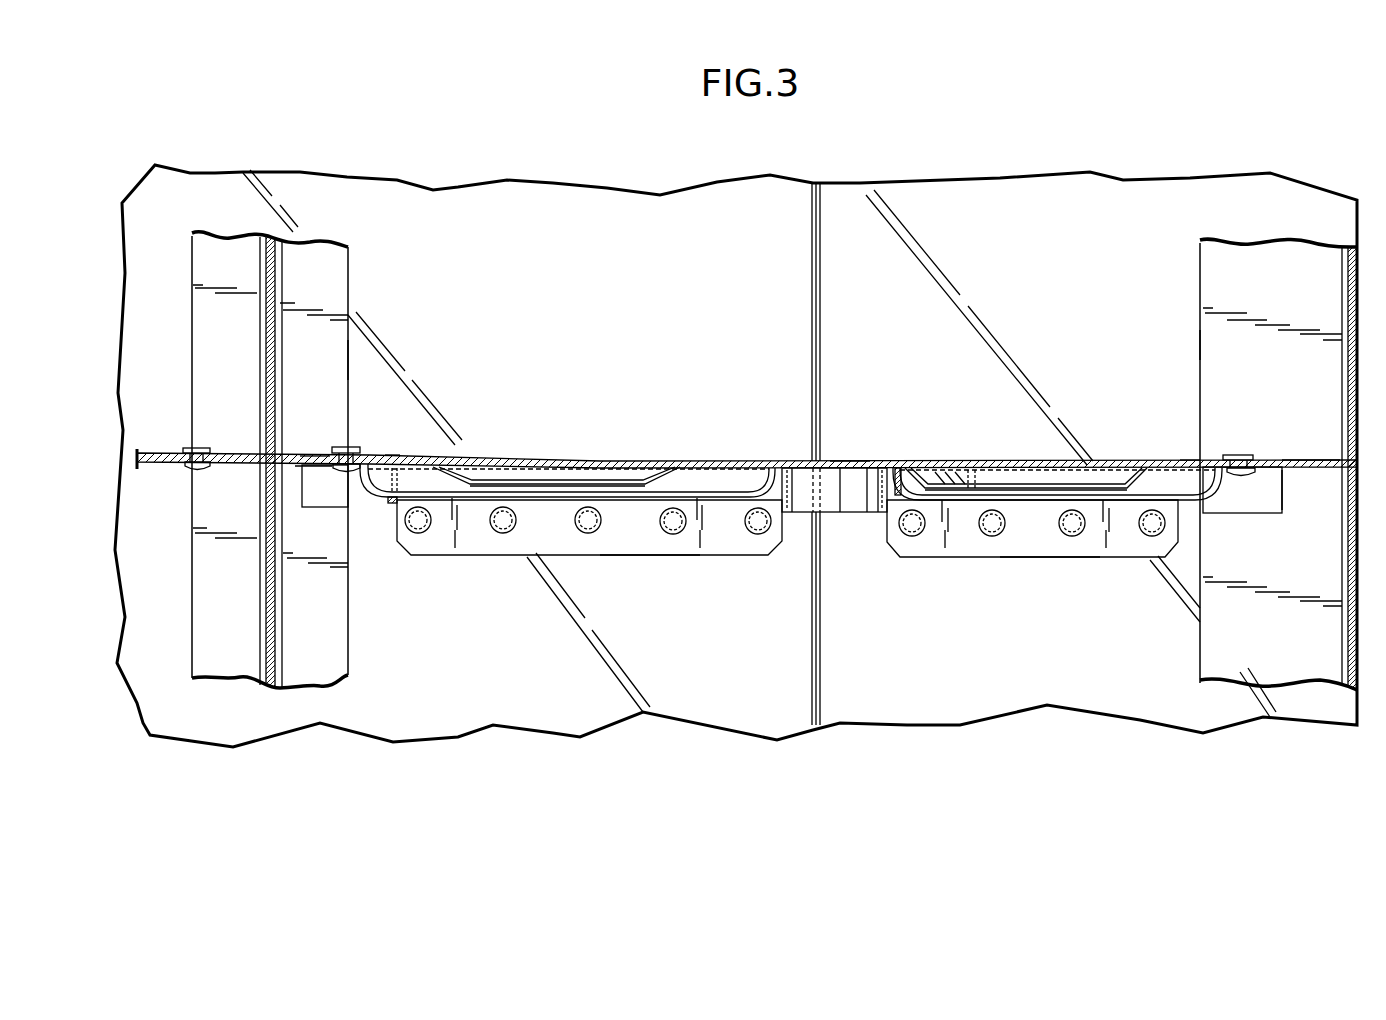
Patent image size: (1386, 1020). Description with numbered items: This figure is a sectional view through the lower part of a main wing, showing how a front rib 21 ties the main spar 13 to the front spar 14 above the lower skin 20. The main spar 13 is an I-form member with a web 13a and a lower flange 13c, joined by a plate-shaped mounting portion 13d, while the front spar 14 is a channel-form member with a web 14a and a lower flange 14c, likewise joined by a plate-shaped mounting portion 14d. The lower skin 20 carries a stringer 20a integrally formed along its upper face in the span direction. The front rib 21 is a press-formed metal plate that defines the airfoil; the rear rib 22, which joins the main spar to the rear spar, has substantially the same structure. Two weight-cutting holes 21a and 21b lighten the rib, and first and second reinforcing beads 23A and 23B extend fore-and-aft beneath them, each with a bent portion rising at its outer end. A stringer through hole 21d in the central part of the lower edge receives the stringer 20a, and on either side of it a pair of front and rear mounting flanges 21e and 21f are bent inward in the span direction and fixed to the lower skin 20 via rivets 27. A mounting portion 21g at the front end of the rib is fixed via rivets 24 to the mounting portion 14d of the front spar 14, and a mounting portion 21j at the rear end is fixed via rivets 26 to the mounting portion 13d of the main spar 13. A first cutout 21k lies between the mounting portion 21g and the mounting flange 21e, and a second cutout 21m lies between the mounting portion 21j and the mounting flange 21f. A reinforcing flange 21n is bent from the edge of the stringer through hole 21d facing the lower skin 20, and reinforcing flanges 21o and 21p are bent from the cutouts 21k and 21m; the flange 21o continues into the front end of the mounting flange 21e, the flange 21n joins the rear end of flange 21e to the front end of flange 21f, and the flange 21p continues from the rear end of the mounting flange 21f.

The main spar 13 is at (356, 270).
The web 13a is at (264, 385).
The lower flange 13c is at (334, 360).
The mounting portion 13d is at (307, 453).
The front spar 14 is at (1198, 265).
The web 14a is at (1350, 283).
The lower flange 14c is at (1210, 346).
The mounting portion 14d is at (1297, 454).
The lower skin 20 is at (572, 313).
The stringer 20a is at (822, 318).
The front rib 21 is at (1090, 460).
The weight-cutting hole 21a is at (995, 487).
The weight-cutting hole 21b is at (573, 480).
The stringer through hole 21d is at (850, 461).
The front mounting flange 21e is at (1052, 554).
The rear mounting flange 21f is at (619, 538).
The mounting portion 21g is at (1278, 486).
The mounting portion 21j is at (307, 468).
The first cutout 21k is at (1190, 461).
The second cutout 21m is at (387, 457).
The reinforcing flange 21n is at (847, 499).
The reinforcing flange 21o is at (1260, 507).
The reinforcing flange 21p is at (321, 494).
The rear rib 22 is at (146, 450).
The first reinforcing bead 23A is at (1027, 500).
The second reinforcing bead 23B is at (638, 497).
The rivets 24 is at (1242, 480).
The rivets 26 is at (347, 473).
The rivets 27 is at (418, 522).